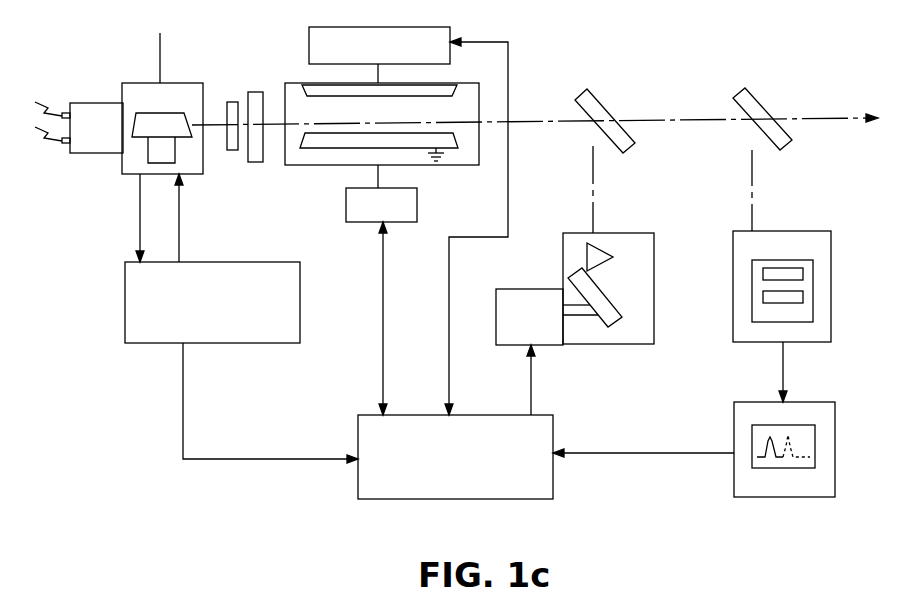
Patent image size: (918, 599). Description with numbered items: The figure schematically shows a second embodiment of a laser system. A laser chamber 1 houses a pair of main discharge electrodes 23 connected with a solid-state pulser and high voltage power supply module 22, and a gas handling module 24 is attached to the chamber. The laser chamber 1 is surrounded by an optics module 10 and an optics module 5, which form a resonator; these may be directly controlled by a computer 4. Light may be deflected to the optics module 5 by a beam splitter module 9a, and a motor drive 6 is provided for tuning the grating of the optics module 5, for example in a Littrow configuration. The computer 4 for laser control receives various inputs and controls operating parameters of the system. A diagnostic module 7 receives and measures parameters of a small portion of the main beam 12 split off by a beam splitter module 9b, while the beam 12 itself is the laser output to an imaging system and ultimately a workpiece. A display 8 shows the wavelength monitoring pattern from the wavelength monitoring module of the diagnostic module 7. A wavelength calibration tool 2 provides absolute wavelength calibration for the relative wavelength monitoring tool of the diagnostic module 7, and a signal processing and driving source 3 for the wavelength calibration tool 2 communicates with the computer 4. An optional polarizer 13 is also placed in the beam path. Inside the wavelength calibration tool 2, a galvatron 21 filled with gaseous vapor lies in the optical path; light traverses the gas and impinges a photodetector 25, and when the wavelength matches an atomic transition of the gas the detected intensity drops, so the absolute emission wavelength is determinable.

The laser chamber 1 is at (382, 124).
The wavelength calibration tool 2 is at (162, 103).
The signal processing and driving source 3 is at (212, 302).
The computer 4 is at (455, 457).
The optics module 5 is at (608, 288).
The motor drive 6 is at (547, 317).
The diagnostic module 7 is at (782, 286).
The display 8 is at (784, 449).
The beam splitter module 9a is at (607, 110).
The beam splitter module 9b is at (763, 108).
The optics module 10 is at (232, 102).
The main beam 12 is at (850, 115).
The polarizer 13 is at (257, 163).
The galvatron 21 is at (162, 138).
The solid-state pulser and high voltage power supply module 22 is at (379, 55).
The main discharge electrodes 23 is at (303, 87).
The gas handling module 24 is at (381, 193).
The photodetector 25 is at (79, 127).